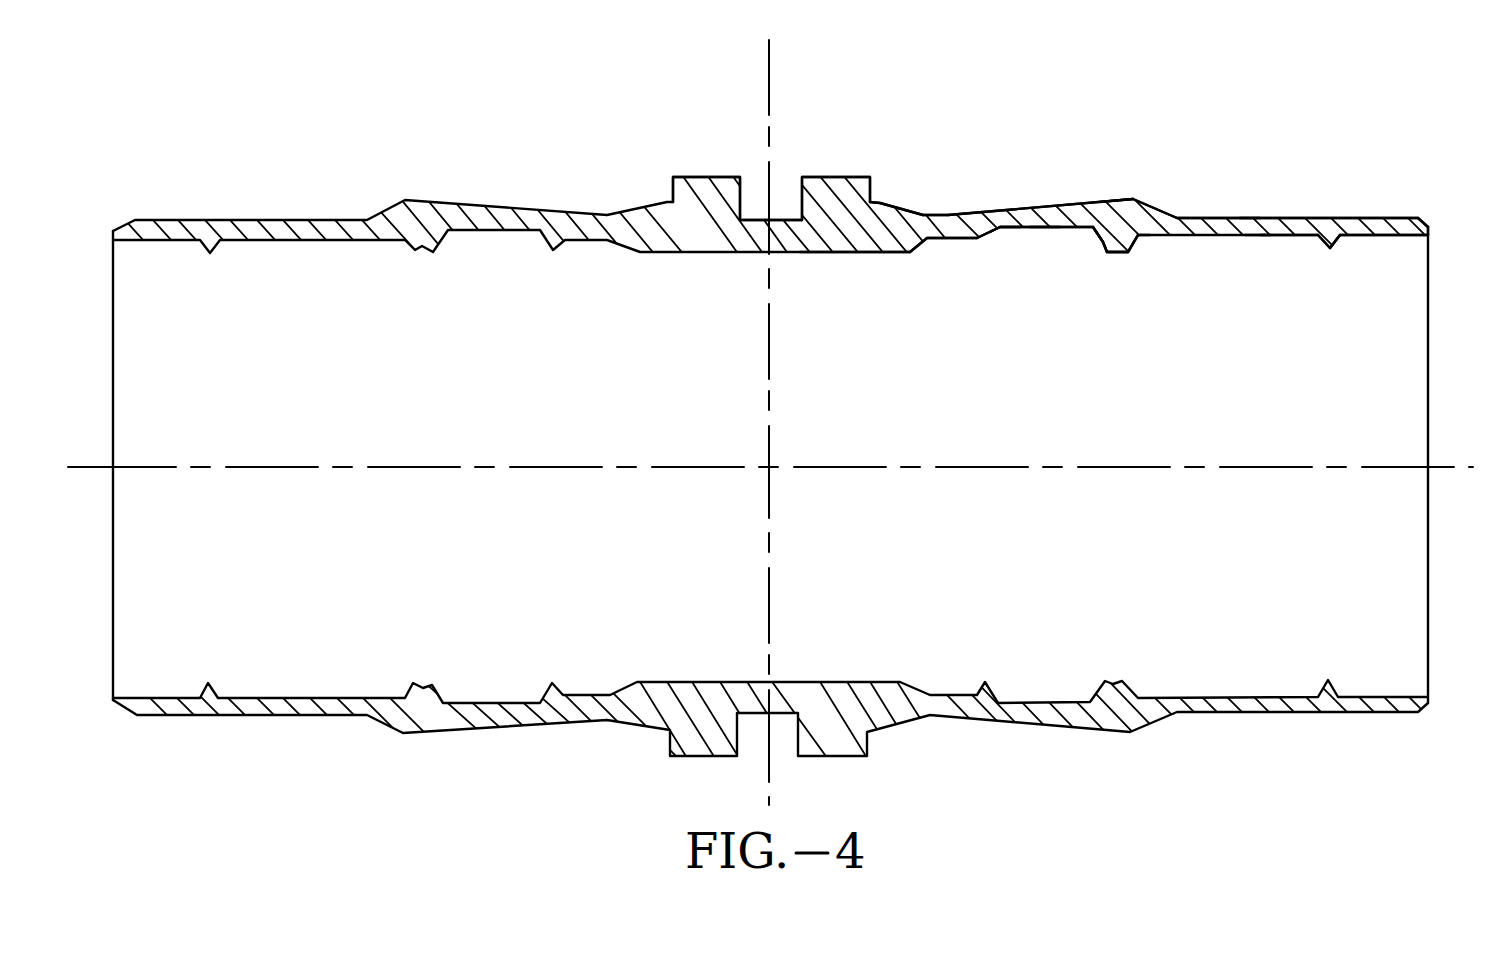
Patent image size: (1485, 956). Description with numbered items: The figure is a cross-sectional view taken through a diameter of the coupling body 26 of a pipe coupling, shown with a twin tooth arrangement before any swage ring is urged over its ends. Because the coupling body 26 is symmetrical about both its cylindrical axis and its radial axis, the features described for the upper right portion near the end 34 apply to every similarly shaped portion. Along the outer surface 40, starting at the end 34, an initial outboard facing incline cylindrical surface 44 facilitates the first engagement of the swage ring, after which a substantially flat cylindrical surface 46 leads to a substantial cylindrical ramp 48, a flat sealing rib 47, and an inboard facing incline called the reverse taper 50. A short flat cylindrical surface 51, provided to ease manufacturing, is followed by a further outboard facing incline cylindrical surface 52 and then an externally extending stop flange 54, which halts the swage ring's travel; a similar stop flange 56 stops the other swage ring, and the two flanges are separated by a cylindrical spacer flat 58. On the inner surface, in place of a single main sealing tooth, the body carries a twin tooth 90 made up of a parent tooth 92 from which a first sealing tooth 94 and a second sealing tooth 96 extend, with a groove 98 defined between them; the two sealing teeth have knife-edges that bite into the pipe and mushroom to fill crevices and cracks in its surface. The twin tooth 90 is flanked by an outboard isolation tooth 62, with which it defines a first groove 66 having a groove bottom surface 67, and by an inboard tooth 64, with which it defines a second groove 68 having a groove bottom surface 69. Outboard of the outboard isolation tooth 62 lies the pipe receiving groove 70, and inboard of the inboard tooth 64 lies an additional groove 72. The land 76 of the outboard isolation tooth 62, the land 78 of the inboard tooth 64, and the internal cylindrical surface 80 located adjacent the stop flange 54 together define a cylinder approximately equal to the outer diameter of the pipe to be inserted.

The coupling body 26 is at (1350, 131).
The end 34 is at (1428, 231).
The outer surface 40 is at (1228, 218).
The incline cylindrical surface 44 is at (1417, 218).
The flat cylindrical surface 46 is at (1256, 218).
The sealing rib 47 is at (1110, 200).
The cylindrical ramp 48 is at (1158, 210).
The reverse taper 50 is at (1027, 205).
The short flat cylindrical surface 51 is at (942, 215).
The incline cylindrical surface 52 is at (896, 205).
The stop flange 54 is at (838, 177).
The stop flange 56 is at (693, 177).
The spacer flat 58 is at (757, 220).
The outboard isolation tooth 62 is at (1334, 242).
The inboard tooth 64 is at (1002, 240).
The first groove 66 is at (1290, 236).
The groove bottom surface 67 is at (1257, 236).
The second groove 68 is at (1060, 230).
The groove bottom surface 69 is at (1028, 231).
The pipe receiving groove 70 is at (1378, 236).
The additional groove 72 is at (943, 239).
The land 76 is at (1328, 250).
The land 78 is at (989, 244).
The internal cylindrical surface 80 is at (853, 253).
The twin tooth 90 is at (1132, 243).
The parent tooth 92 is at (1101, 244).
The first sealing tooth 94 is at (1108, 252).
The second sealing tooth 96 is at (1120, 252).
The groove 98 is at (1113, 252).